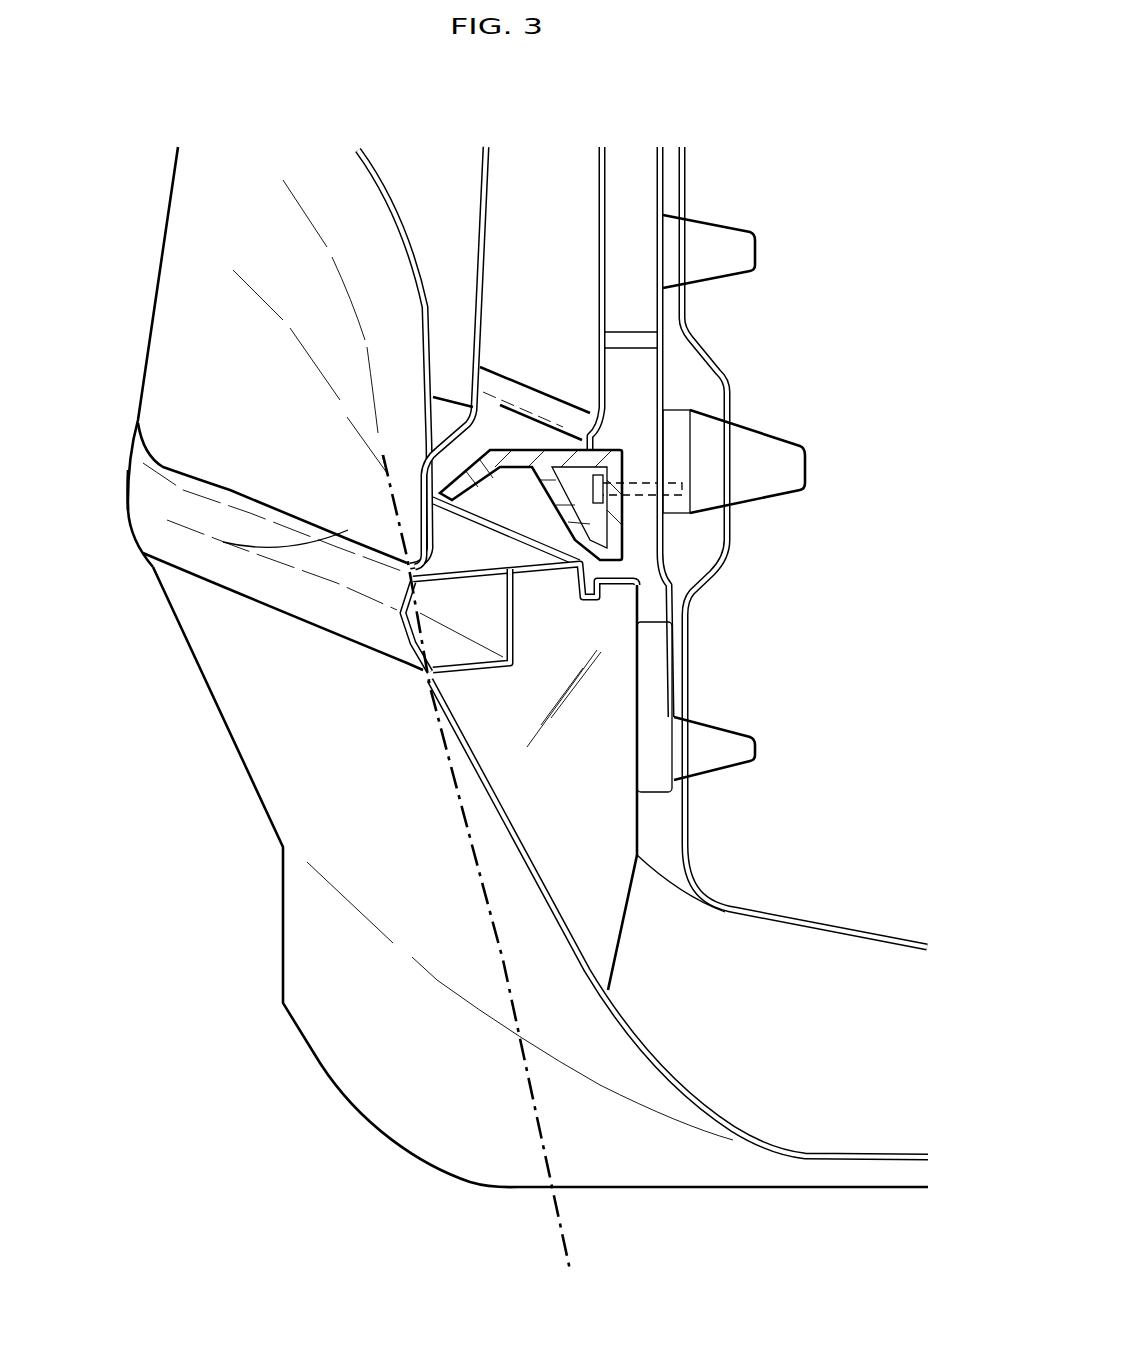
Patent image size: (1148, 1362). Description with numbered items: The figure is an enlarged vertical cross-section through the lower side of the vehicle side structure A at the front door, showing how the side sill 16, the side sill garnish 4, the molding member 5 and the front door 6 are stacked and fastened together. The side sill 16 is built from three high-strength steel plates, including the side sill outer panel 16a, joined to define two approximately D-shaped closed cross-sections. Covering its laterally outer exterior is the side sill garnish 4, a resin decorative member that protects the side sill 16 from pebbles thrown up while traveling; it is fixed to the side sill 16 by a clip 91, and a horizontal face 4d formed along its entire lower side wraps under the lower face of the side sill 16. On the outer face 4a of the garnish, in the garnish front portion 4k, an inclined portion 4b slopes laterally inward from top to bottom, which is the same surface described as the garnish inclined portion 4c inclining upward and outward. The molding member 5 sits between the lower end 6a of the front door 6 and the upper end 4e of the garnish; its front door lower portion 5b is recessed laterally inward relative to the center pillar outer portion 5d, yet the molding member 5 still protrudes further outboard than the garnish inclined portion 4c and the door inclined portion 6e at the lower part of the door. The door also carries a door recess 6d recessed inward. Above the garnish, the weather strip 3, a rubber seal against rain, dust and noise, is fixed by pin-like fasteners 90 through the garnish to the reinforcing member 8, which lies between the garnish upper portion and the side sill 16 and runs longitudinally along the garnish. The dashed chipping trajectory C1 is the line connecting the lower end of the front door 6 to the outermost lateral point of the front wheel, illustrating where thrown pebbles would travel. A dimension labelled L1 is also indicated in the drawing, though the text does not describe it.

The vehicle side structure A is at (128, 138).
The weather strip 3 is at (562, 448).
The side sill garnish 4 is at (266, 835).
The outer face 4a is at (288, 708).
The inclined portion 4b is at (425, 880).
The garnish inclined portion 4c is at (520, 1001).
The horizontal face 4d is at (885, 1160).
The upper end 4e is at (293, 620).
The garnish front portion 4k is at (312, 750).
The molding member 5 is at (122, 520).
The front door lower portion 5b is at (250, 573).
The center pillar outer portion 5d is at (127, 500).
The front door 6 is at (158, 229).
The lower end 6a is at (223, 542).
The door recess 6d is at (313, 308).
The door inclined portion 6e is at (280, 389).
The reinforcing member 8 is at (633, 370).
The side sill 16 is at (857, 947).
The side sill outer panel 16a is at (793, 925).
The fastener 90 is at (637, 495).
The clip 91 is at (715, 222).
The chipping trajectory C1 is at (557, 1240).
The distance L1 is at (428, 833).